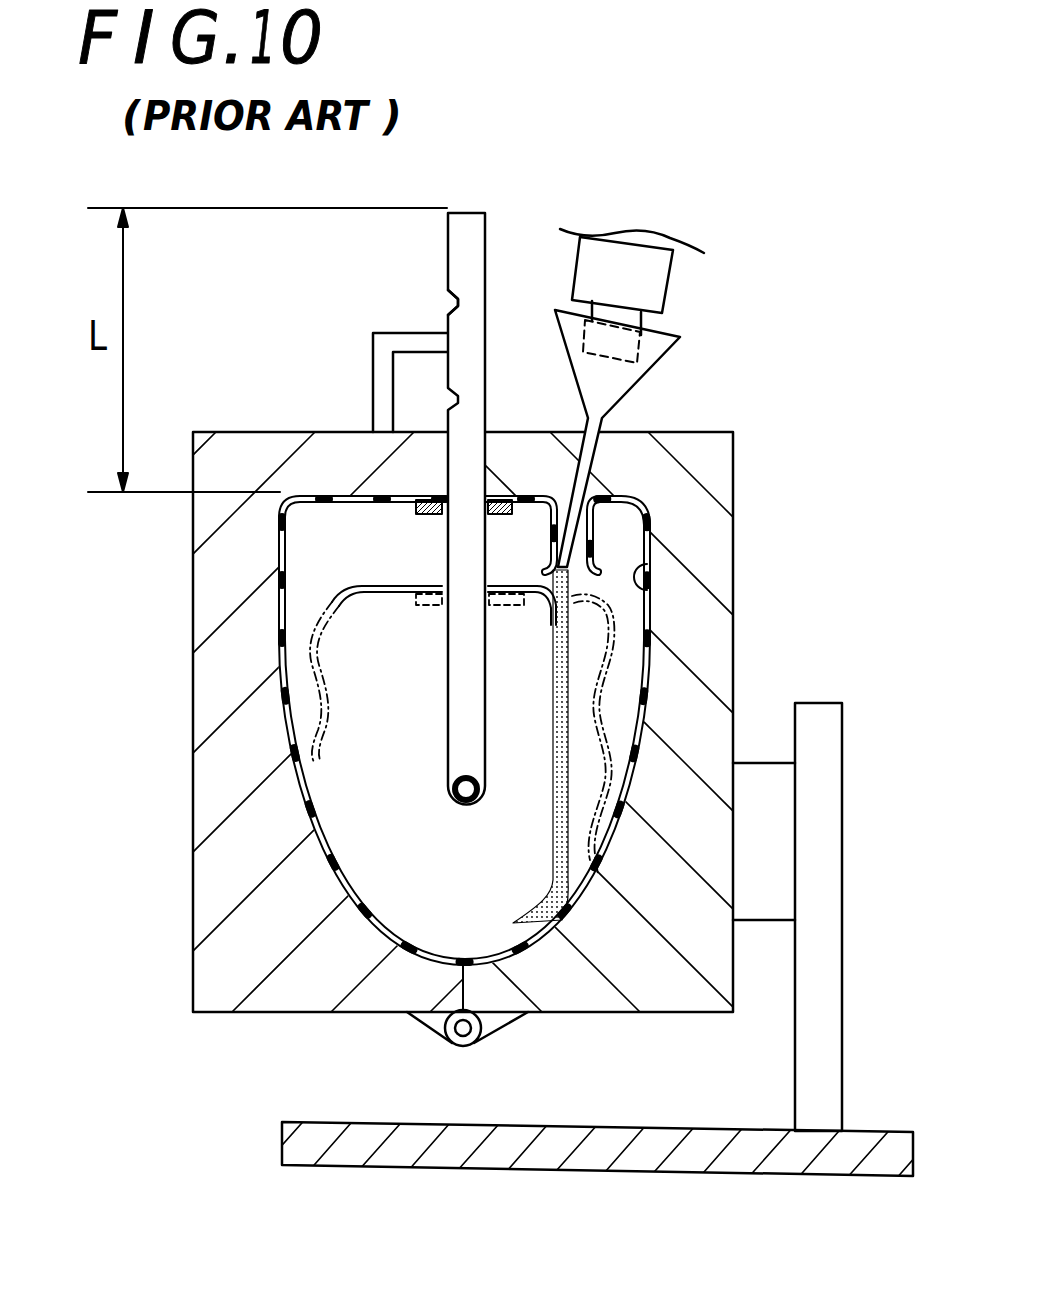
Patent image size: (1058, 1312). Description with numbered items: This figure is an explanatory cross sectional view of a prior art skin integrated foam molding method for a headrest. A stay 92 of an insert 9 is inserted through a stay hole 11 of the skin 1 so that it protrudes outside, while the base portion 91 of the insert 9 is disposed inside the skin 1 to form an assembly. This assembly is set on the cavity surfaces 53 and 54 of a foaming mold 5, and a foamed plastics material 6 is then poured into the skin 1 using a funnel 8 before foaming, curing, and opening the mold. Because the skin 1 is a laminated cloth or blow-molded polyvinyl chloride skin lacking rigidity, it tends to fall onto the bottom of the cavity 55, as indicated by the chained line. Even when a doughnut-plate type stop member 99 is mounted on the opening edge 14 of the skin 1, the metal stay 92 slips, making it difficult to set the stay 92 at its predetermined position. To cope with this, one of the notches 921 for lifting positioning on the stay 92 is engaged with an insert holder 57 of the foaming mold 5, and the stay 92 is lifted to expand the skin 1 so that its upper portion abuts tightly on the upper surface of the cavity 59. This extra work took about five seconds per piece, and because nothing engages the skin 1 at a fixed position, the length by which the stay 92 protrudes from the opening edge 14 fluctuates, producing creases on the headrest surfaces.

The skin 1 is at (375, 598).
The foaming mold 5 is at (192, 684).
The foamed plastics material 6 is at (552, 856).
The funnel 8 is at (665, 360).
The insert 9 is at (480, 475).
The stay hole 11 is at (463, 487).
The opening edge 14 is at (433, 494).
The cavity surface 53 is at (633, 593).
The cavity surface 54 is at (318, 728).
The cavity 55 is at (406, 865).
The insert holder 57 is at (373, 340).
The upper surface of the cavity 59 is at (323, 500).
The base portion 91 is at (485, 792).
The stay 92 is at (480, 475).
The stop member 99 is at (432, 513).
The notch 921 is at (447, 297).